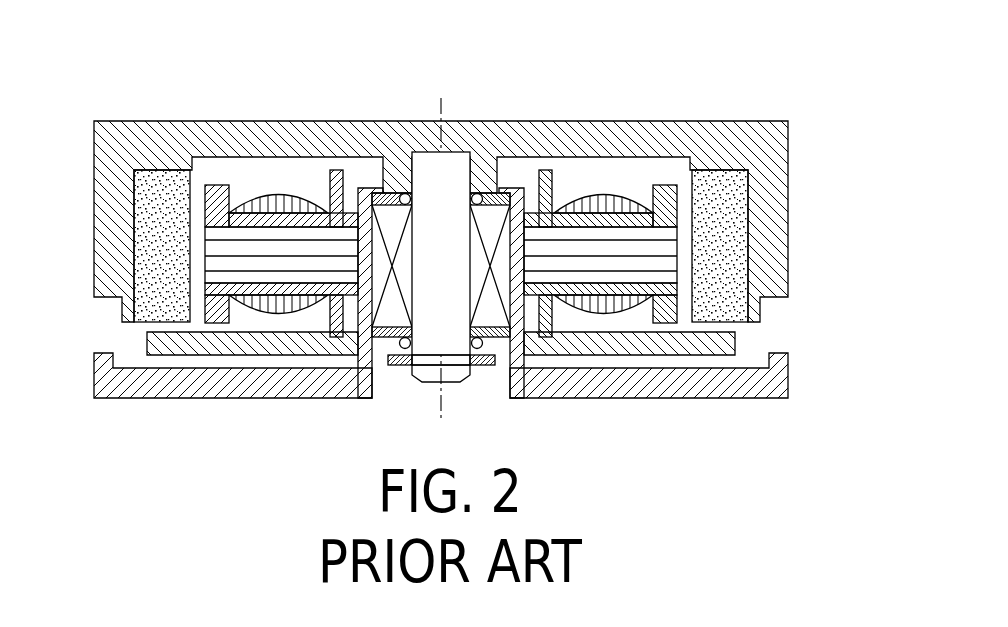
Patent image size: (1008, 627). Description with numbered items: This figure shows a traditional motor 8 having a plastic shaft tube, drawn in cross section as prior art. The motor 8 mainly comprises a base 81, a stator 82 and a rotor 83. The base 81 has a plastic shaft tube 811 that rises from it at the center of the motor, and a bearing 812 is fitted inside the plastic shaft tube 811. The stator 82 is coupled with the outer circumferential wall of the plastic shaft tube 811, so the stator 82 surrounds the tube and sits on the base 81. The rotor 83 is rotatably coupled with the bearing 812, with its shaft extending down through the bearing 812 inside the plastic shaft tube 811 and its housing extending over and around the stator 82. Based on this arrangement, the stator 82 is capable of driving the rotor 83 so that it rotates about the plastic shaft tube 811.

The motor 8 is at (722, 111).
The base 81 is at (670, 387).
The plastic shaft tube 811 is at (515, 224).
The bearing 812 is at (487, 224).
The stator 82 is at (620, 193).
The rotor 83 is at (287, 128).